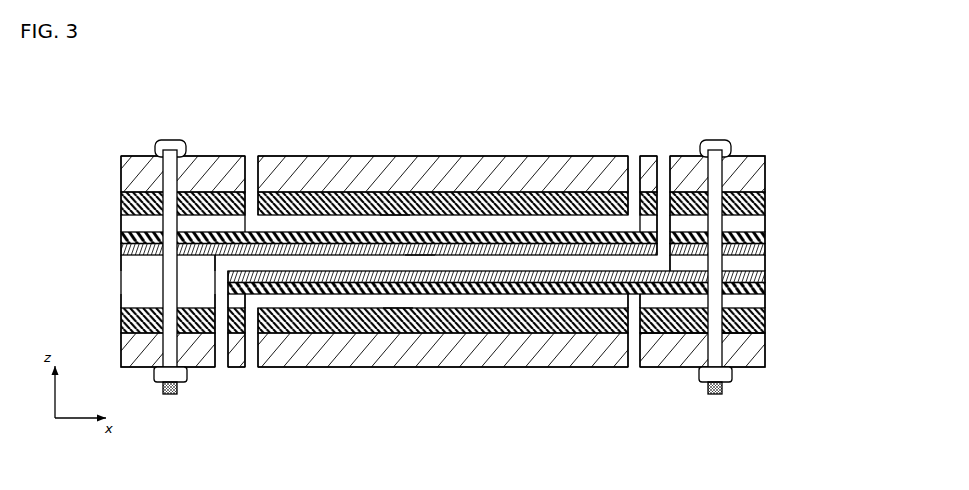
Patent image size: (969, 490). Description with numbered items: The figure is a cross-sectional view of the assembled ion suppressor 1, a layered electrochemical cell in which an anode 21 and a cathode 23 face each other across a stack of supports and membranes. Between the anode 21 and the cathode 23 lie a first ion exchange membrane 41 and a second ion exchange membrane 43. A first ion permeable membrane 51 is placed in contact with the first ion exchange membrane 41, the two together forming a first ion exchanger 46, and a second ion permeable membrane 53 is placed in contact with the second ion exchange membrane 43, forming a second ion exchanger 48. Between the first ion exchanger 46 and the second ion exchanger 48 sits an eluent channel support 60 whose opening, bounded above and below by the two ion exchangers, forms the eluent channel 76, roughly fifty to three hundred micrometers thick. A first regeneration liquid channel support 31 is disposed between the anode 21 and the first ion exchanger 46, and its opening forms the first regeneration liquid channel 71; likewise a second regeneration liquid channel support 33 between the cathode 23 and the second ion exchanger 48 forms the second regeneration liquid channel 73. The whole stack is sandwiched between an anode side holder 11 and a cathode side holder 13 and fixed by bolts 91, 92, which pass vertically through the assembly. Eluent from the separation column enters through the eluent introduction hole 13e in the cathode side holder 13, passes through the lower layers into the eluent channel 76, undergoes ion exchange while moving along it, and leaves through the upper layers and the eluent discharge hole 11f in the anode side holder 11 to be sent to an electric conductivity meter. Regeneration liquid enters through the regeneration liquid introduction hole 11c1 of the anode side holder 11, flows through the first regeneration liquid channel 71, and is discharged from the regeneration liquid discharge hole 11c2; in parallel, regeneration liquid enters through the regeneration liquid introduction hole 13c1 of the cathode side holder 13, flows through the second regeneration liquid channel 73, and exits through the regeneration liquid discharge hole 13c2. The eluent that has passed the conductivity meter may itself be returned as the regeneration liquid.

The ion suppressor 1 is at (100, 191).
The anode side holder 11 is at (765, 171).
The cathode side holder 13 is at (757, 348).
The anode 21 is at (765, 203).
The cathode 23 is at (765, 322).
The first regeneration liquid channel support 31 is at (753, 223).
The second regeneration liquid channel support 33 is at (757, 300).
The first ion exchange membrane 41 is at (765, 250).
The second ion exchange membrane 43 is at (765, 274).
The first ion exchanger 46 is at (510, 238).
The second ion exchanger 48 is at (563, 290).
The first ion permeable membrane 51 is at (765, 237).
The second ion permeable membrane 53 is at (765, 288).
The eluent channel support 60 is at (757, 263).
The first regeneration liquid channel 71 is at (394, 224).
The second regeneration liquid channel 73 is at (398, 304).
The eluent channel 76 is at (421, 257).
The bolt 91 is at (165, 142).
The bolt 92 is at (716, 144).
The regeneration liquid introduction hole 11c1 is at (633, 97).
The regeneration liquid discharge hole 11c2 is at (251, 98).
The eluent discharge hole 11f is at (663, 98).
The regeneration liquid introduction hole 13c1 is at (633, 430).
The regeneration liquid discharge hole 13c2 is at (251, 429).
The eluent introduction hole 13e is at (221, 369).